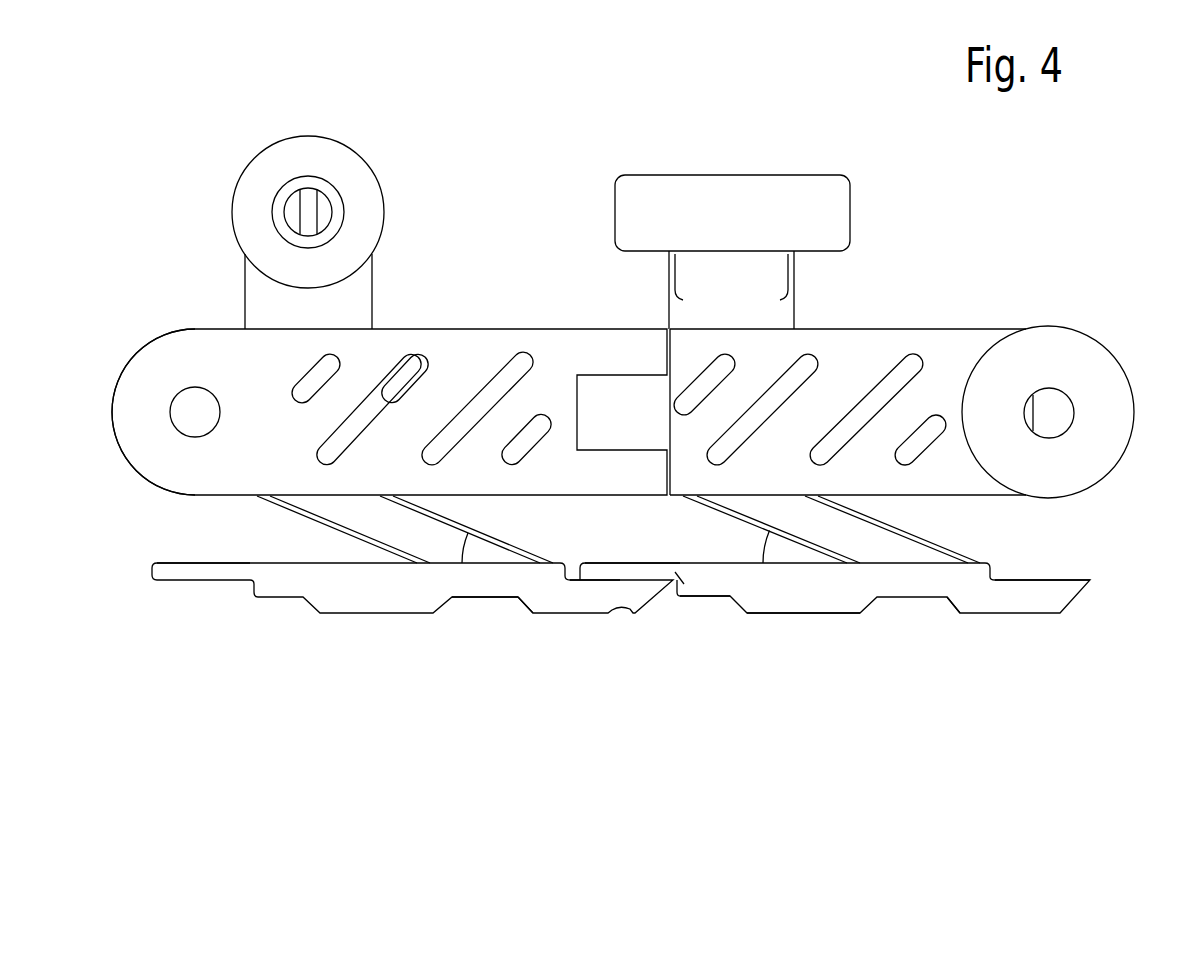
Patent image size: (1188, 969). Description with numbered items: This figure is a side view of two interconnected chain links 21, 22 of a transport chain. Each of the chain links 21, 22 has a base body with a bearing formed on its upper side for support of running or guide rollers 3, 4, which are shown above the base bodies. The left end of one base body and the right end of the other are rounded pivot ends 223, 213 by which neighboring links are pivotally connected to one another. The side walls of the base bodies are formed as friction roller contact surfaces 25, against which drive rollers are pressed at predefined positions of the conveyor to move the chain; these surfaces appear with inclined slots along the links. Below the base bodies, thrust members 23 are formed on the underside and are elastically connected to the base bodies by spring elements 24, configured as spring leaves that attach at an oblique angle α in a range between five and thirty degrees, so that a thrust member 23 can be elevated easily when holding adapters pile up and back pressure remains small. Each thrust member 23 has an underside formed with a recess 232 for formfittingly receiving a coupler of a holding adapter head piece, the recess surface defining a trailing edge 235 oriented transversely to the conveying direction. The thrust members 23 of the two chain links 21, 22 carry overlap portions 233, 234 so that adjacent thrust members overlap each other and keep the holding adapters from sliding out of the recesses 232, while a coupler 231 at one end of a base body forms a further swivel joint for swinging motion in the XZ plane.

The running or guide roller 3 is at (265, 178).
The running or guide roller 4 is at (790, 198).
The chain link 21 is at (985, 305).
The chain link 22 is at (532, 283).
The pivot end of first link plate 213 is at (1097, 372).
The pivot end of second link plate 223 is at (152, 372).
The friction roller contact surface 25 is at (440, 385).
The spring element 24 is at (405, 508).
The thrust member 23 is at (383, 630).
The coupler 231 is at (770, 600).
The recess 232 is at (473, 600).
The overlap portion 233 is at (185, 573).
The overlap portion 234 is at (597, 588).
The trailing edge 235 is at (525, 600).